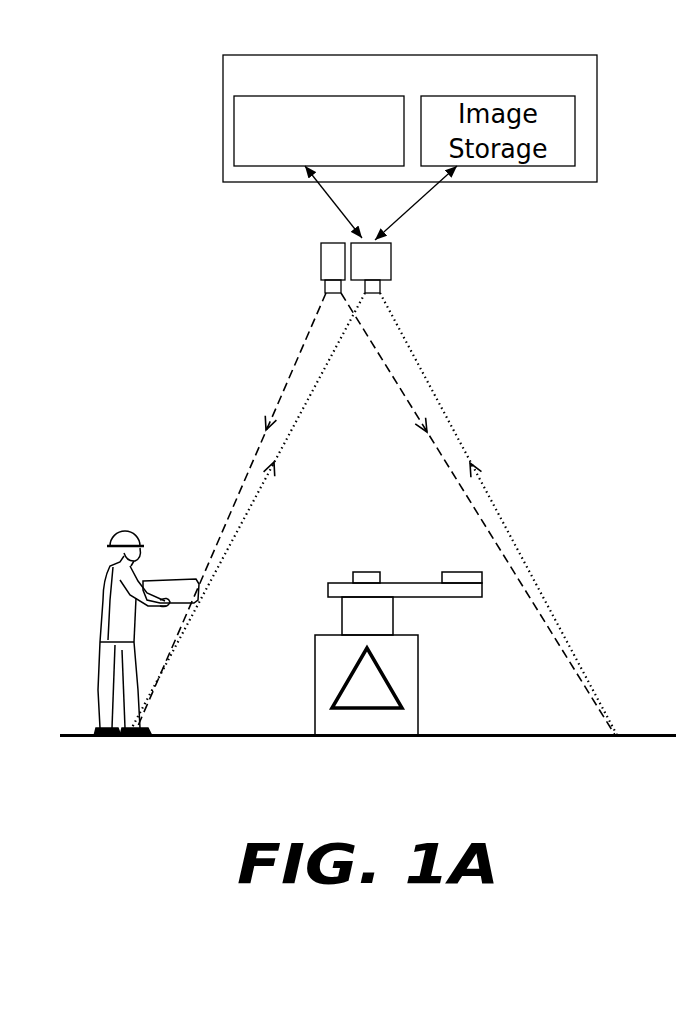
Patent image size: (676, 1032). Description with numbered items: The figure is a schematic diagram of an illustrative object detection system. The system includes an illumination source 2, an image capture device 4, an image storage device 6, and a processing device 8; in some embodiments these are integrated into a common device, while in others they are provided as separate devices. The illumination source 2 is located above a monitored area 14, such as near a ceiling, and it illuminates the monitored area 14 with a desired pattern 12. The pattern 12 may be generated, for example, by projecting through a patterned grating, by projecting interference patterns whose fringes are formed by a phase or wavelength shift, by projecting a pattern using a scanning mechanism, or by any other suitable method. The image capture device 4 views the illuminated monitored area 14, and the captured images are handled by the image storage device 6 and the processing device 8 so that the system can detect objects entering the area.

The illumination source 2 is at (321, 256).
The image capture device 4 is at (380, 249).
The image storage device 6 is at (565, 125).
The processing device 8 is at (262, 162).
The pattern 12 is at (433, 433).
The monitored area 14 is at (453, 727).